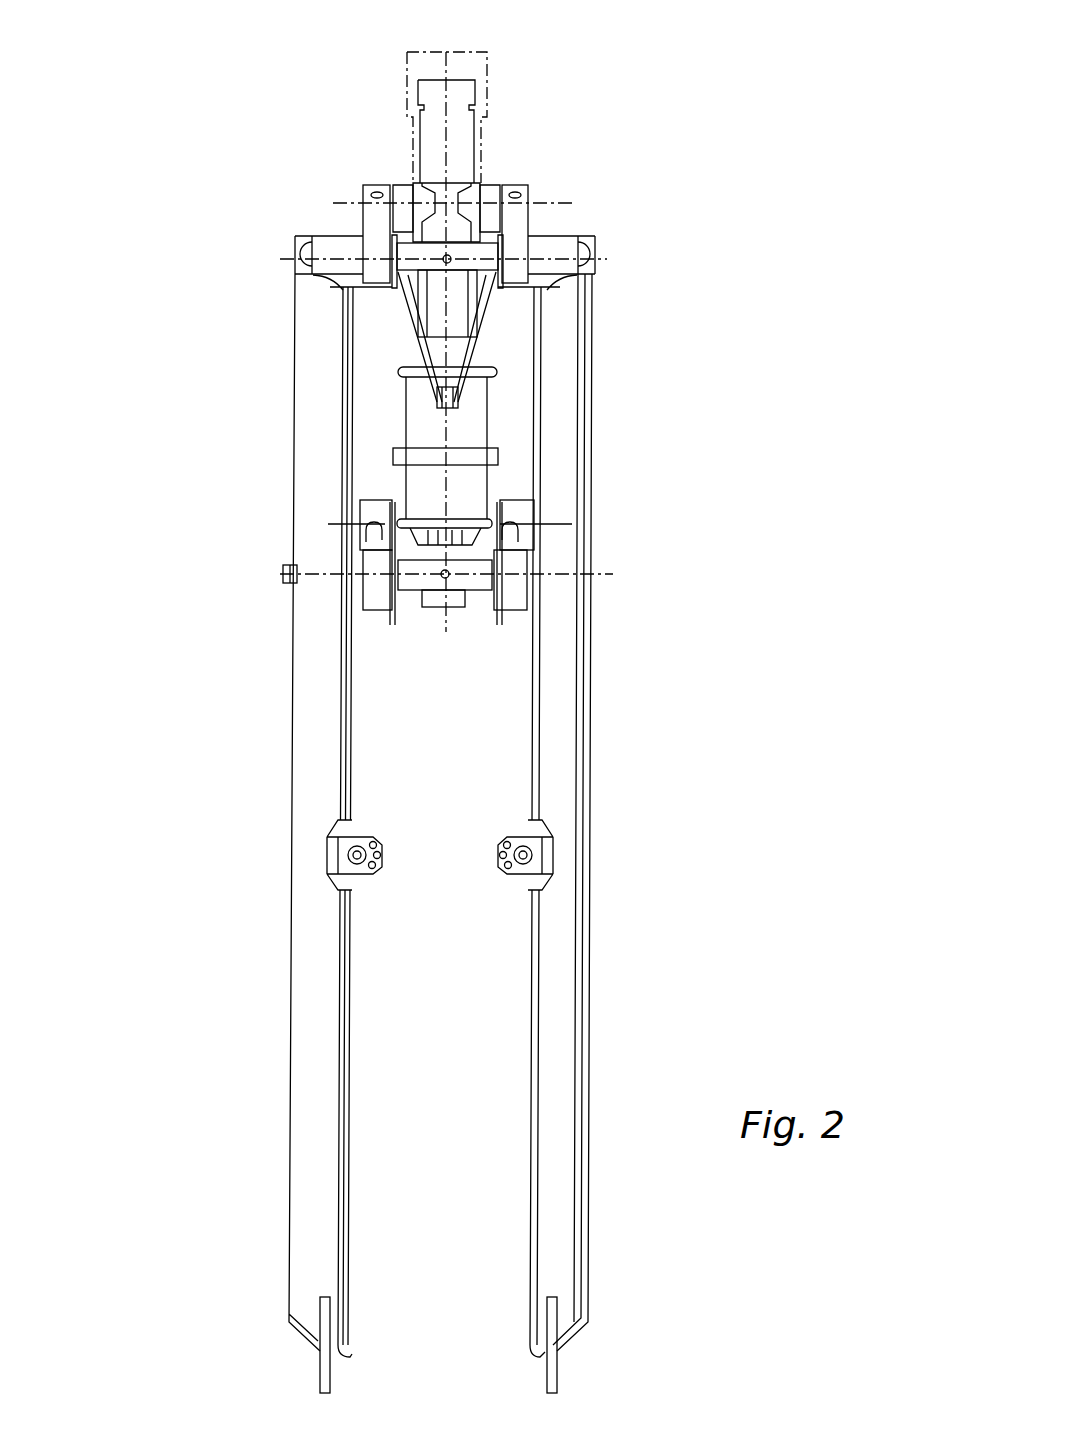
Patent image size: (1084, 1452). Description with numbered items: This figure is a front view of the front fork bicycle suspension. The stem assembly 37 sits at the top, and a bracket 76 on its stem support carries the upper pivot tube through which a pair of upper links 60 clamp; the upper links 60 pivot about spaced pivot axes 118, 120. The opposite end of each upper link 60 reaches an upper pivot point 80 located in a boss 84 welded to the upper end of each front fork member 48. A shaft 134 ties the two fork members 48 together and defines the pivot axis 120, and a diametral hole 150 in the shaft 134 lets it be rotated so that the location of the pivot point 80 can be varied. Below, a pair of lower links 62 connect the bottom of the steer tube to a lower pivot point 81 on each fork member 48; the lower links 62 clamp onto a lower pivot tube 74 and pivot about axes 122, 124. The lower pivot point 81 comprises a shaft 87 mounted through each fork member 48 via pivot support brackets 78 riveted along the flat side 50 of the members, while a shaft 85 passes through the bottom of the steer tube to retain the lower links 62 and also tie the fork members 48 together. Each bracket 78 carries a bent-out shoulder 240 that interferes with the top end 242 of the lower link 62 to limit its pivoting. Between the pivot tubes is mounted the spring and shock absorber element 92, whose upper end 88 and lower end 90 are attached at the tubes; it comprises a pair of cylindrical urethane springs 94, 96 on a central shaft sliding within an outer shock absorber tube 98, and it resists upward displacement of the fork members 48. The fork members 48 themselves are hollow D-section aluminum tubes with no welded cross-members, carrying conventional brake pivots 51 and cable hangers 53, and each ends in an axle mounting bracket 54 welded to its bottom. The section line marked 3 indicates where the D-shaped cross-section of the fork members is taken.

The stem assembly 37 is at (470, 48).
The bracket 76 is at (480, 125).
The upper end of the spring and shock absorber element 88 is at (465, 183).
The upper links 60 is at (383, 183).
The pivot axis 118 is at (573, 203).
The pivot axis 120 is at (554, 246).
The boss 84 is at (313, 238).
The upper pivot point 80 is at (302, 281).
The diametral hole 150 is at (437, 270).
The outer shock absorber tube 98 is at (433, 287).
The cable hangers 53 is at (428, 300).
The shaft 134 is at (497, 277).
The spring and shock absorber element 92 is at (500, 386).
The cylindrical urethane spring 96 is at (470, 415).
The cylindrical urethane spring 94 is at (467, 487).
The lower links 62 is at (365, 505).
The shoulder 240 is at (372, 546).
The pivot axis 122 is at (577, 522).
The pivot support brackets 78 is at (383, 556).
The pivot axis 124 is at (565, 578).
The top end of the lower link 242 is at (522, 556).
The shaft 87 is at (412, 545).
The shaft 85 is at (423, 580).
The lower end of the spring and shock absorber element 90 is at (456, 594).
The lower pivot tube 74 is at (486, 598).
The lower pivot point 81 is at (352, 606).
The front fork members 48 is at (297, 843).
The flat side 50 is at (350, 1213).
The brake pivots 51 is at (500, 849).
The axle mounting bracket 54 is at (332, 1385).
The section line 3- 3 is at (290, 1048).